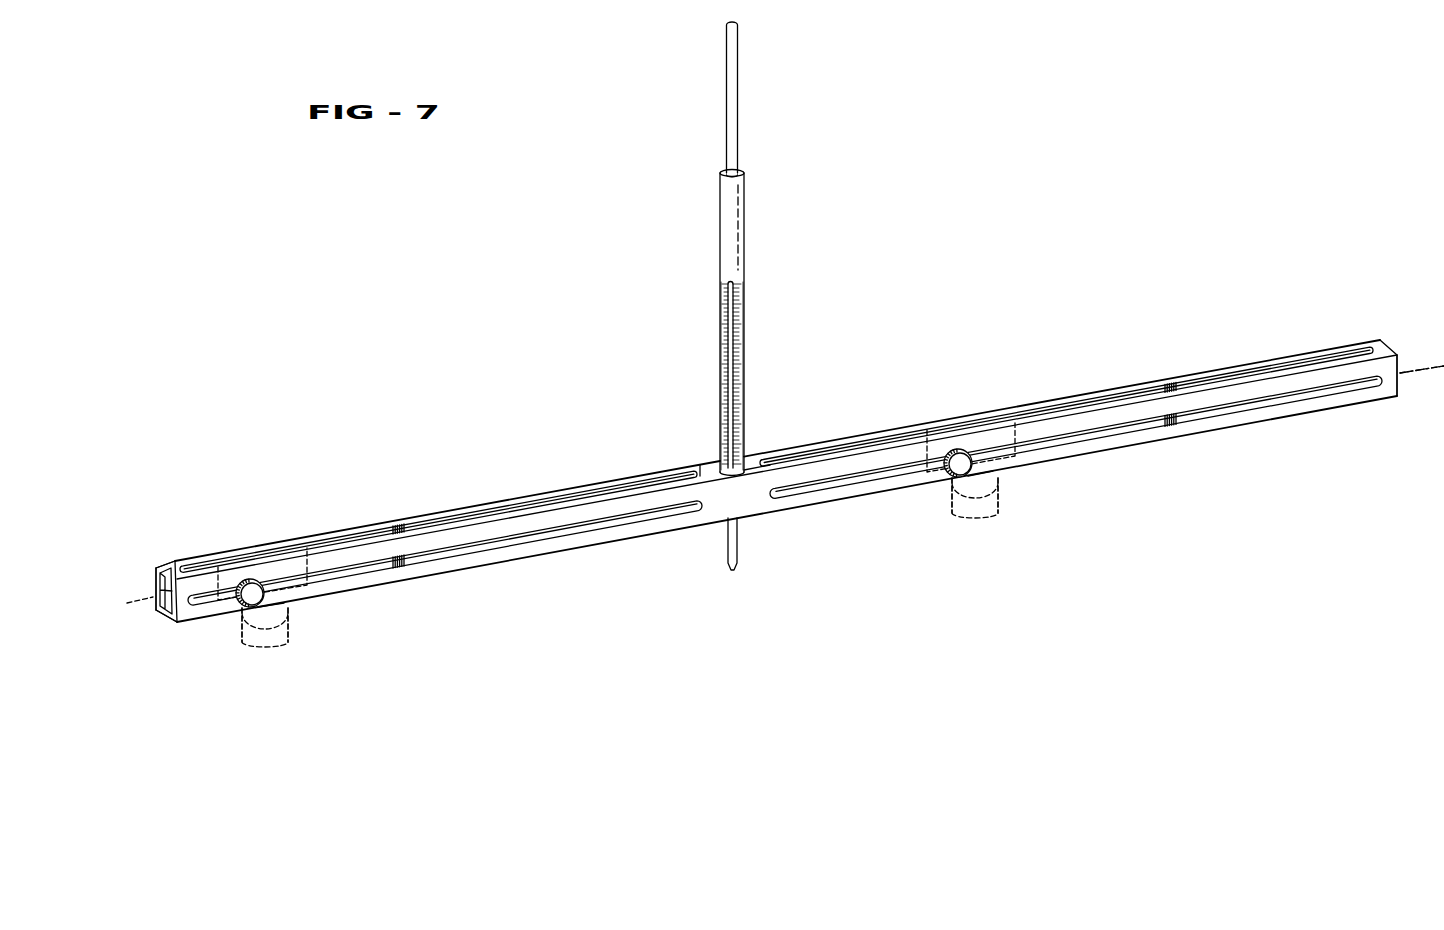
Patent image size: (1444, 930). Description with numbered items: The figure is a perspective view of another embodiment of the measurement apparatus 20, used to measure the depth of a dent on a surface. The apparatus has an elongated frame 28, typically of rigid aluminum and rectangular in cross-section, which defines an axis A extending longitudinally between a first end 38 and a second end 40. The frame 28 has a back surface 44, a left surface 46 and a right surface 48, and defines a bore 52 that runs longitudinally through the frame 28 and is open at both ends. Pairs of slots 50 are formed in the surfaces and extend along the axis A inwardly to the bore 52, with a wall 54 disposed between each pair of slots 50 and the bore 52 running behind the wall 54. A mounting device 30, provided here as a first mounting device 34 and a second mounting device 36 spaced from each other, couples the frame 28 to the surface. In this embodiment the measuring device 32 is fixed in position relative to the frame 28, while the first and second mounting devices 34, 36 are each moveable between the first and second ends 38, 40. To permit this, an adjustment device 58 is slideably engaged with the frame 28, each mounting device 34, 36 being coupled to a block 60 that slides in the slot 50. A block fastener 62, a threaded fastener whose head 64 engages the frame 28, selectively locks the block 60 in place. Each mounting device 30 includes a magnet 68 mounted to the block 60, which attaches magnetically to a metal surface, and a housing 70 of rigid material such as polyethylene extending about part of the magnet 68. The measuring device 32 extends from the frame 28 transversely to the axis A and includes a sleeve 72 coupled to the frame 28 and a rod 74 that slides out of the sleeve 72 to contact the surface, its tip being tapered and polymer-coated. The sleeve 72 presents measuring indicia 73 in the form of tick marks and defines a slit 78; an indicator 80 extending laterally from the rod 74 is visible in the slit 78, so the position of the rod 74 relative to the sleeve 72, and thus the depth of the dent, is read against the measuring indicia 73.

The measurement apparatus 20 is at (893, 250).
The frame 28 is at (172, 553).
The mounting device 30 is at (244, 645).
The measuring device 32 is at (740, 196).
The first mounting device 34 is at (283, 645).
The second mounting device 36 is at (1003, 505).
The first end 38 is at (1400, 405).
The second end 40 is at (178, 624).
The back surface 44 is at (712, 467).
The left surface 46 is at (160, 583).
The right surface 48 is at (718, 520).
The slot 50 is at (386, 530).
The bore 52 is at (158, 600).
The wall 54 is at (750, 500).
The adjustment device 58 is at (675, 471).
The block 60 is at (317, 560).
The block fastener 62 is at (248, 598).
The head 64 is at (253, 590).
The magnet 68 is at (295, 625).
The housing 70 is at (292, 606).
The sleeve 72 is at (740, 245).
The measuring indicia 73 is at (744, 404).
The rod 74 is at (738, 120).
The slit 78 is at (722, 300).
The indicator 80 is at (733, 328).
The axis A is at (1412, 362).